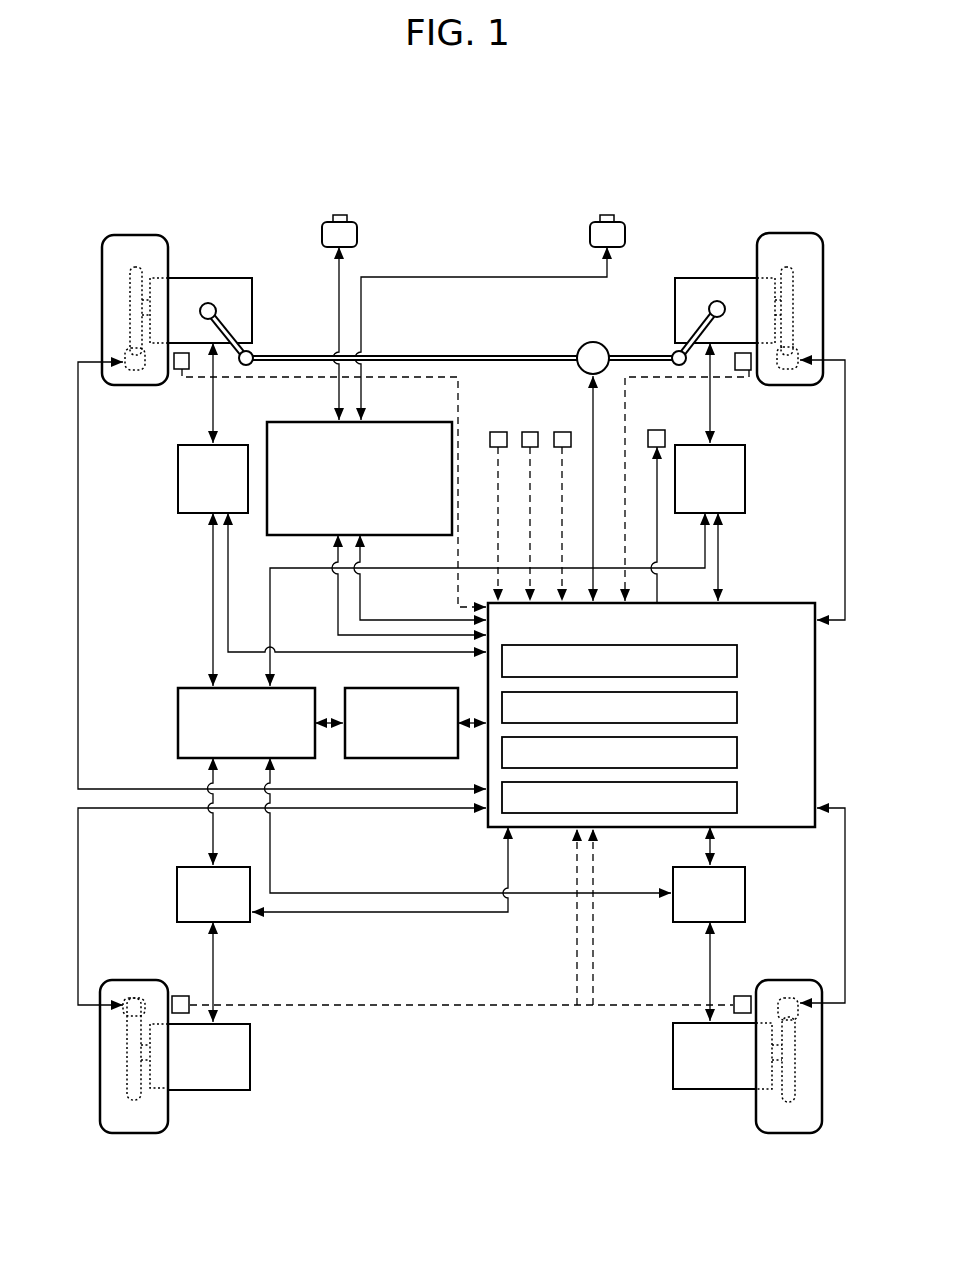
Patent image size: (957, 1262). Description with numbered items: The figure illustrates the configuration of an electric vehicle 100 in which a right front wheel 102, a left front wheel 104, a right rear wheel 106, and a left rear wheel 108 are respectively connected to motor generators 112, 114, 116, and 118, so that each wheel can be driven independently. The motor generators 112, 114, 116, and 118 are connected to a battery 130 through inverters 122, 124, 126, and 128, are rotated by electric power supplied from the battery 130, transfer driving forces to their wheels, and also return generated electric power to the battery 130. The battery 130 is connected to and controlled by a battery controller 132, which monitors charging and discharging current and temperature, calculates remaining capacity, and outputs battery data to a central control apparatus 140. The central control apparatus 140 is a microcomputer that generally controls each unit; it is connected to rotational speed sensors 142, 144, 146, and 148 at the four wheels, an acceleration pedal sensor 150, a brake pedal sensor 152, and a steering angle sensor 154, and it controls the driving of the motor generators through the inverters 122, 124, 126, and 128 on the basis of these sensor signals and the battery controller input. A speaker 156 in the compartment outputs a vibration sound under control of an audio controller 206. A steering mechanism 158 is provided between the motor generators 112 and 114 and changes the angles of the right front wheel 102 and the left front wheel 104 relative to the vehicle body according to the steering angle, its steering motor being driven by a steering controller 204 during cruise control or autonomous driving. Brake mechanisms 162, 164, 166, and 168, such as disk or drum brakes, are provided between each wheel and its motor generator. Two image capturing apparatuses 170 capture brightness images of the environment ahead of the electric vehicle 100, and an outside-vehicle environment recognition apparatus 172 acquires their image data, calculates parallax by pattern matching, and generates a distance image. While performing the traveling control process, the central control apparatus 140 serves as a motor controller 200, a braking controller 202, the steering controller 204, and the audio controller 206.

The electric vehicle 100 is at (152, 148).
The right front wheel 102 is at (792, 234).
The left front wheel 104 is at (137, 234).
The right rear wheel 106 is at (790, 1134).
The left rear wheel 108 is at (133, 1134).
The motor generator 112 is at (717, 277).
The motor generator 114 is at (194, 277).
The motor generator 116 is at (712, 1090).
The motor generator 118 is at (207, 1091).
The inverter 122 is at (746, 477).
The inverter 124 is at (178, 476).
The inverter 126 is at (746, 880).
The inverter 128 is at (177, 880).
The battery 130 is at (188, 687).
The battery controller 132 is at (408, 687).
The central control apparatus 140 is at (651, 699).
The rotational speed sensor 142 is at (745, 371).
The rotational speed sensor 144 is at (181, 371).
The rotational speed sensor 146 is at (743, 995).
The rotational speed sensor 148 is at (179, 995).
The acceleration pedal sensor 150 is at (562, 432).
The brake pedal sensor 152 is at (530, 432).
The steering angle sensor 154 is at (498, 432).
The speaker 156 is at (656, 430).
The steering mechanism 158 is at (565, 344).
The brake mechanism 162 is at (808, 370).
The brake mechanism 164 is at (133, 372).
The brake mechanism 166 is at (802, 994).
The brake mechanism 168 is at (128, 996).
The image capturing apparatus 170 is at (340, 215).
The outside-vehicle environment recognition apparatus 172 is at (267, 421).
The motor controller 200 is at (738, 662).
The braking controller 202 is at (738, 708).
The steering controller 204 is at (738, 754).
The audio controller 206 is at (738, 800).